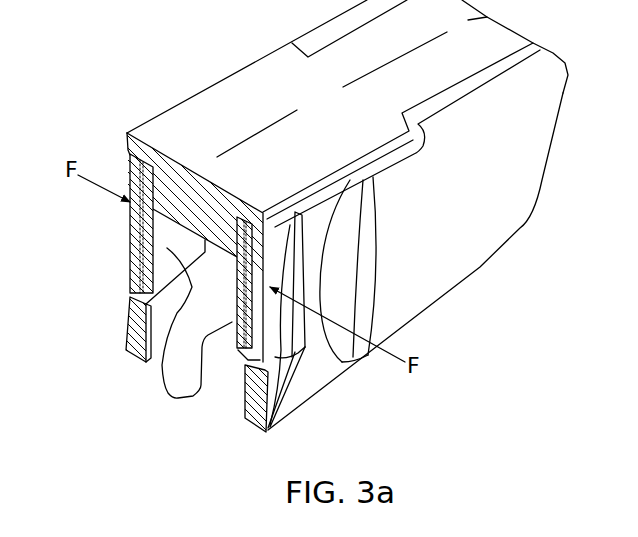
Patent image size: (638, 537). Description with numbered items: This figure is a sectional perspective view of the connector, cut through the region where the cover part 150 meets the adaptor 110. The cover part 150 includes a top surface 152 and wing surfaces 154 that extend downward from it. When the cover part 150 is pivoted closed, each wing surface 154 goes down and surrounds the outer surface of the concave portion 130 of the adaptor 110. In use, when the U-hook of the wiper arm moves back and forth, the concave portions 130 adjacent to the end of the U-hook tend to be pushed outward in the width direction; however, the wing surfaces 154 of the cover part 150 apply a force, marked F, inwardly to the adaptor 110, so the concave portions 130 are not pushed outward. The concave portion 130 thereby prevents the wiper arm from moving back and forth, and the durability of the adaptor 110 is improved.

The adaptor 110 is at (482, 266).
The concave portion 130 is at (196, 345).
The cover part 150 is at (162, 115).
The top surface 152 is at (270, 83).
The wing surface 154 is at (320, 238).